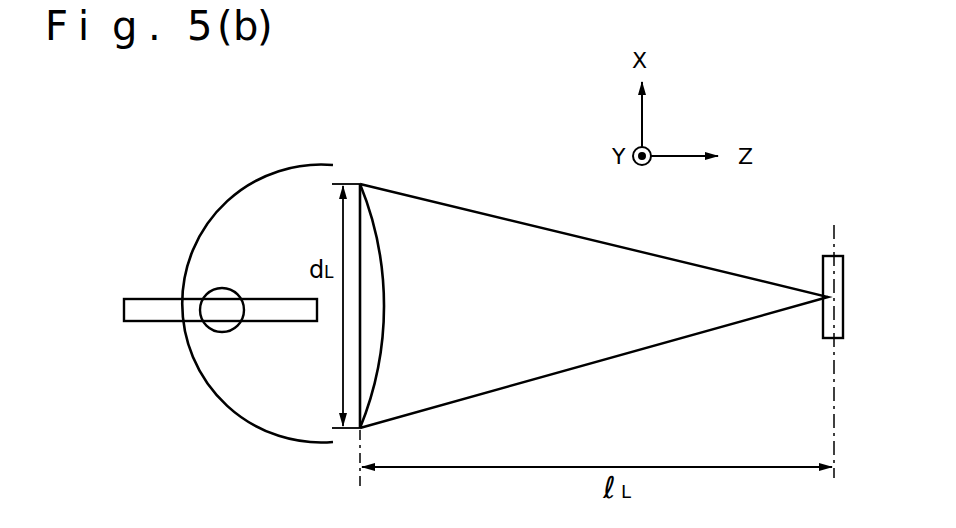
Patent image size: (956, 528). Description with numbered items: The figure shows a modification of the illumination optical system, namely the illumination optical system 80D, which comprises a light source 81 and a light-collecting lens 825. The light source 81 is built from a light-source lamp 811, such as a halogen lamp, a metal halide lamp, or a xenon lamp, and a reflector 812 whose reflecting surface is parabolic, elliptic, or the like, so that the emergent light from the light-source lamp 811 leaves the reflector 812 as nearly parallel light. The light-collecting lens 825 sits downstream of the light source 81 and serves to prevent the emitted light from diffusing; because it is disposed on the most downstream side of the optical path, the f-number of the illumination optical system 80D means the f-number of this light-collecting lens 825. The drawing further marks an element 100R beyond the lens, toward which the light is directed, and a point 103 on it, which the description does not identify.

The illumination optical system 80D is at (319, 158).
The light source 81 is at (216, 204).
The reflector 812 is at (287, 183).
The light-source lamp 811 is at (238, 323).
The light-collecting lens 825 is at (370, 393).
The liquid crystal light valve (red) 100R is at (823, 262).
The light incident position on light valve 103 is at (840, 304).